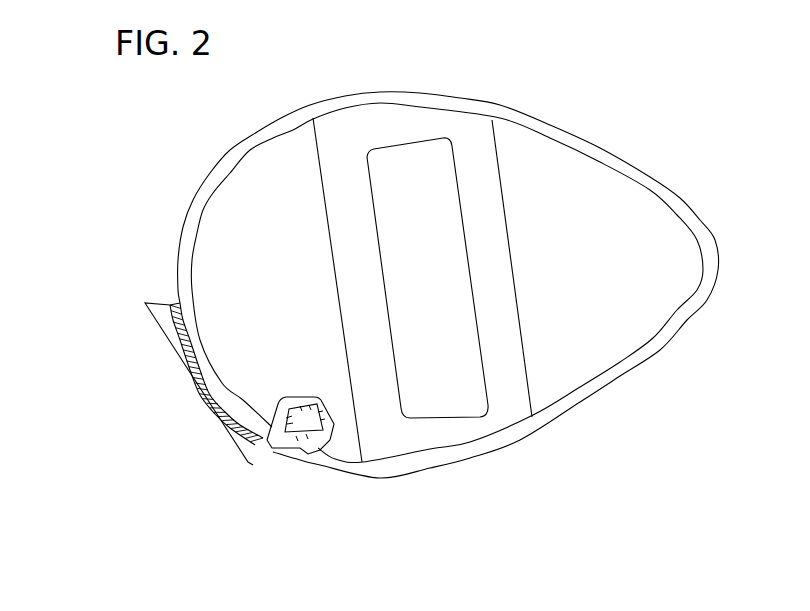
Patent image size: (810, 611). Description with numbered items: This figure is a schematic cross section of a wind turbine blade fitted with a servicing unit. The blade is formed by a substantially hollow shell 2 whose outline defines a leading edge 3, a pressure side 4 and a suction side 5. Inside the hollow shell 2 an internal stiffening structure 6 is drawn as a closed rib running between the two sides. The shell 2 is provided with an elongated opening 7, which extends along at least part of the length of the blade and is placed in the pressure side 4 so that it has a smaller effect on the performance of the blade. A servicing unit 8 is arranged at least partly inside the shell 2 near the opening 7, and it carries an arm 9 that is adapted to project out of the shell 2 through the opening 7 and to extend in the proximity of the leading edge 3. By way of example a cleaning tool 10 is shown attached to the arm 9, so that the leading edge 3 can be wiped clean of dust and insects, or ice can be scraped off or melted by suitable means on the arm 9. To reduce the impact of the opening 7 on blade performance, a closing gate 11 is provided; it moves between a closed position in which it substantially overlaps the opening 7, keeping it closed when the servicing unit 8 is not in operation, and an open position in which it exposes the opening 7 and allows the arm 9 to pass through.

The shell 2 is at (640, 178).
The leading edge 3 is at (173, 287).
The pressure side 4 is at (460, 473).
The suction side 5 is at (373, 87).
The internal stiffening structure 6 is at (507, 345).
The elongated opening 7 is at (268, 452).
The servicing unit 8 is at (300, 423).
The arm 9 is at (285, 448).
The cleaning tool 10 is at (163, 340).
The closing gate 11 is at (292, 457).